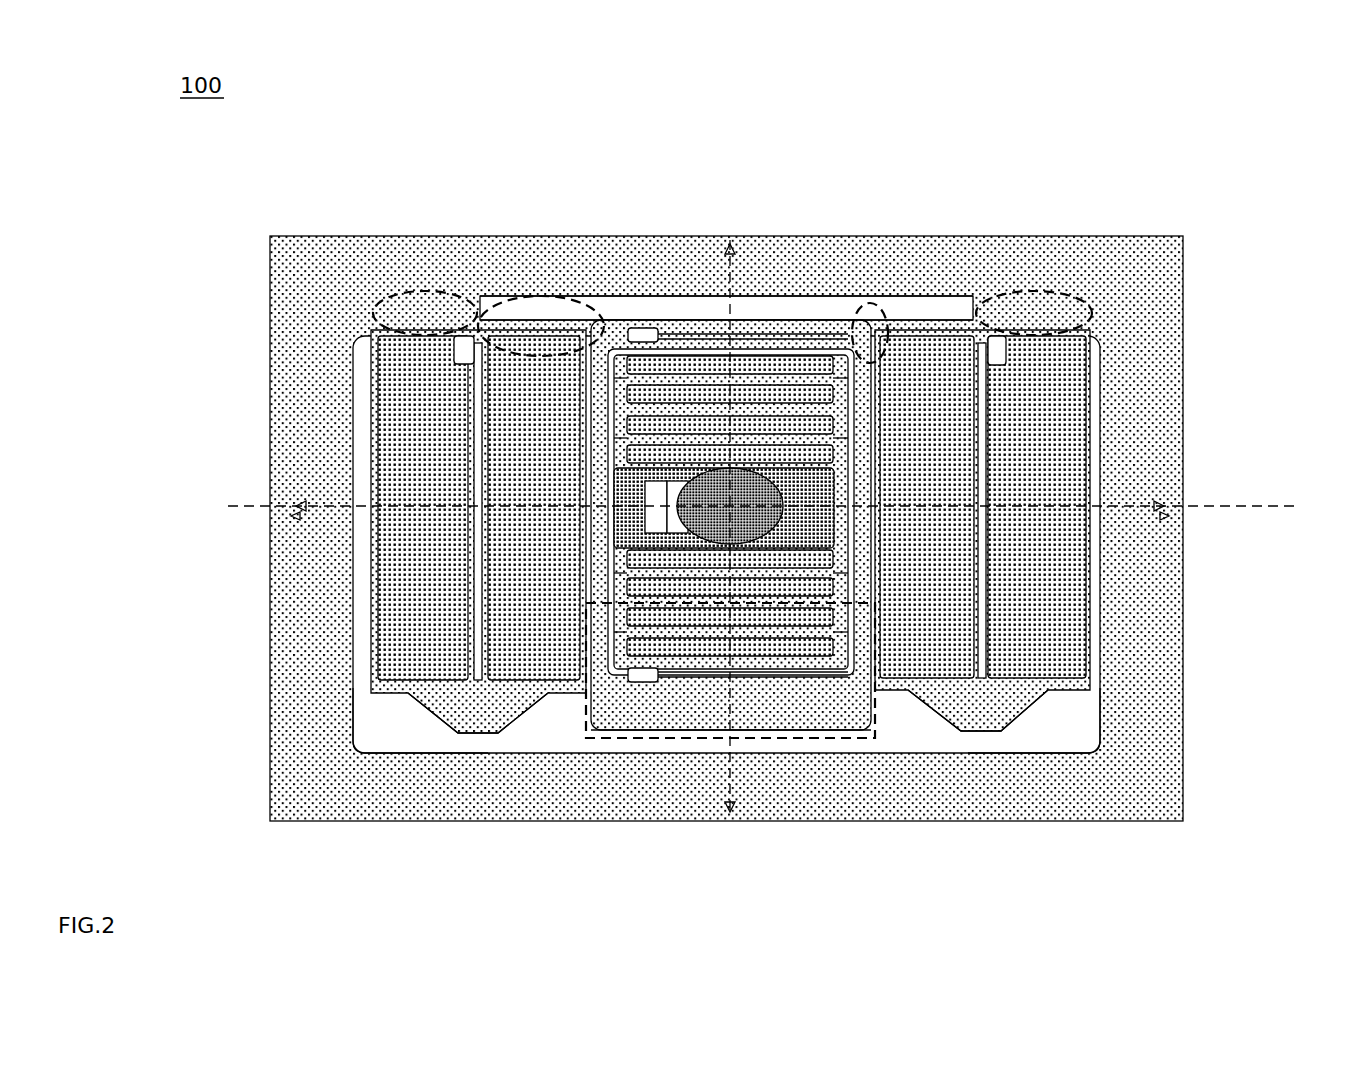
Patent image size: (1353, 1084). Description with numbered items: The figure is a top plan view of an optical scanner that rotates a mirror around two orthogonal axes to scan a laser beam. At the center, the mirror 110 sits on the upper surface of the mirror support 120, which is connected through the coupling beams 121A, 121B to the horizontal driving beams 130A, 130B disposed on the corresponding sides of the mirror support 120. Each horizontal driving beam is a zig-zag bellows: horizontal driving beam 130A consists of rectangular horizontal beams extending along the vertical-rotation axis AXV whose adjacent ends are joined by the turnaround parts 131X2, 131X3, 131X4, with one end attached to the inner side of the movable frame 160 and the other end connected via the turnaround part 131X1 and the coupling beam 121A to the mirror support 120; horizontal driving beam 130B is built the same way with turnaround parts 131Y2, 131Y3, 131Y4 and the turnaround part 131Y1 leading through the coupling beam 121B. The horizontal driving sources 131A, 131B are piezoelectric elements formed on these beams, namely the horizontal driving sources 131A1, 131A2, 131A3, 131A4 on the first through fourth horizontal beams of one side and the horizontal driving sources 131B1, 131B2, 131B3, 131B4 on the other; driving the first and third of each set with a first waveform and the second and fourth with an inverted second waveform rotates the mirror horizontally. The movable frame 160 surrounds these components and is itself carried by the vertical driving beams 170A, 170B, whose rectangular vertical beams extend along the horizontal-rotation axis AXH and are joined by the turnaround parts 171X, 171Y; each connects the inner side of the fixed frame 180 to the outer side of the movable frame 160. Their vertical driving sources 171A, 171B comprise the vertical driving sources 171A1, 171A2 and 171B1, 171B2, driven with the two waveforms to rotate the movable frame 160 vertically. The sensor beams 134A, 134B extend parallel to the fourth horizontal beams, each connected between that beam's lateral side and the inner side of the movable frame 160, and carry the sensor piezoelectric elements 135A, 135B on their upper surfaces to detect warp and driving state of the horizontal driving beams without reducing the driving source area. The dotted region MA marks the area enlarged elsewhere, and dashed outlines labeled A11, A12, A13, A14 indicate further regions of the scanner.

The fixed frame 180 is at (1112, 228).
The mirror 110 is at (612, 478).
The mirror support 120 is at (772, 487).
The coupling beam 121A is at (636, 480).
The coupling beam 121B is at (636, 522).
The movable frame 160 is at (838, 522).
The horizontal driving beam 130A is at (818, 332).
The horizontal driving beam 130B is at (806, 665).
The horizontal driving source 131A is at (729, 256).
The horizontal driving source 131A1 is at (660, 442).
The horizontal driving source 131A2 is at (710, 412).
The horizontal driving source 131A3 is at (762, 382).
The horizontal driving source 131A4 is at (800, 352).
The horizontal driving source 131B is at (718, 761).
The horizontal driving source 131B1 is at (656, 552).
The horizontal driving source 131B2 is at (690, 580).
The horizontal driving source 131B3 is at (735, 612).
The horizontal driving source 131B4 is at (785, 640).
The turnaround part 131X1 is at (608, 440).
The turnaround part 131X2 is at (838, 432).
The turnaround part 131X3 is at (608, 385).
The turnaround part 131X4 is at (838, 362).
The turnaround part 131Y1 is at (594, 560).
The turnaround part 131Y2 is at (838, 562).
The turnaround part 131Y3 is at (616, 608).
The turnaround part 131Y4 is at (838, 618).
The sensor beam 134A is at (642, 328).
The sensor beam 134B is at (642, 668).
The sensor piezoelectric element 135A is at (628, 322).
The sensor piezoelectric element 135B is at (628, 678).
The vertical driving beam 170A is at (1042, 698).
The vertical driving beam 170B is at (385, 698).
The vertical driving source 171A is at (987, 651).
The vertical driving source 171A1 is at (910, 662).
The vertical driving source 171A2 is at (1018, 662).
The vertical driving source 171B is at (321, 531).
The vertical driving source 171B1 is at (500, 553).
The vertical driving source 171B2 is at (380, 612).
The turnaround part 171X is at (960, 705).
The turnaround part 171Y is at (460, 712).
The region A11 is at (860, 297).
The region A12 is at (1015, 282).
The region A13 is at (578, 294).
The region A14 is at (410, 282).
The horizontal-rotation axis AXH is at (728, 498).
The vertical-rotation axis AXV is at (786, 506).
The region MA is at (870, 705).